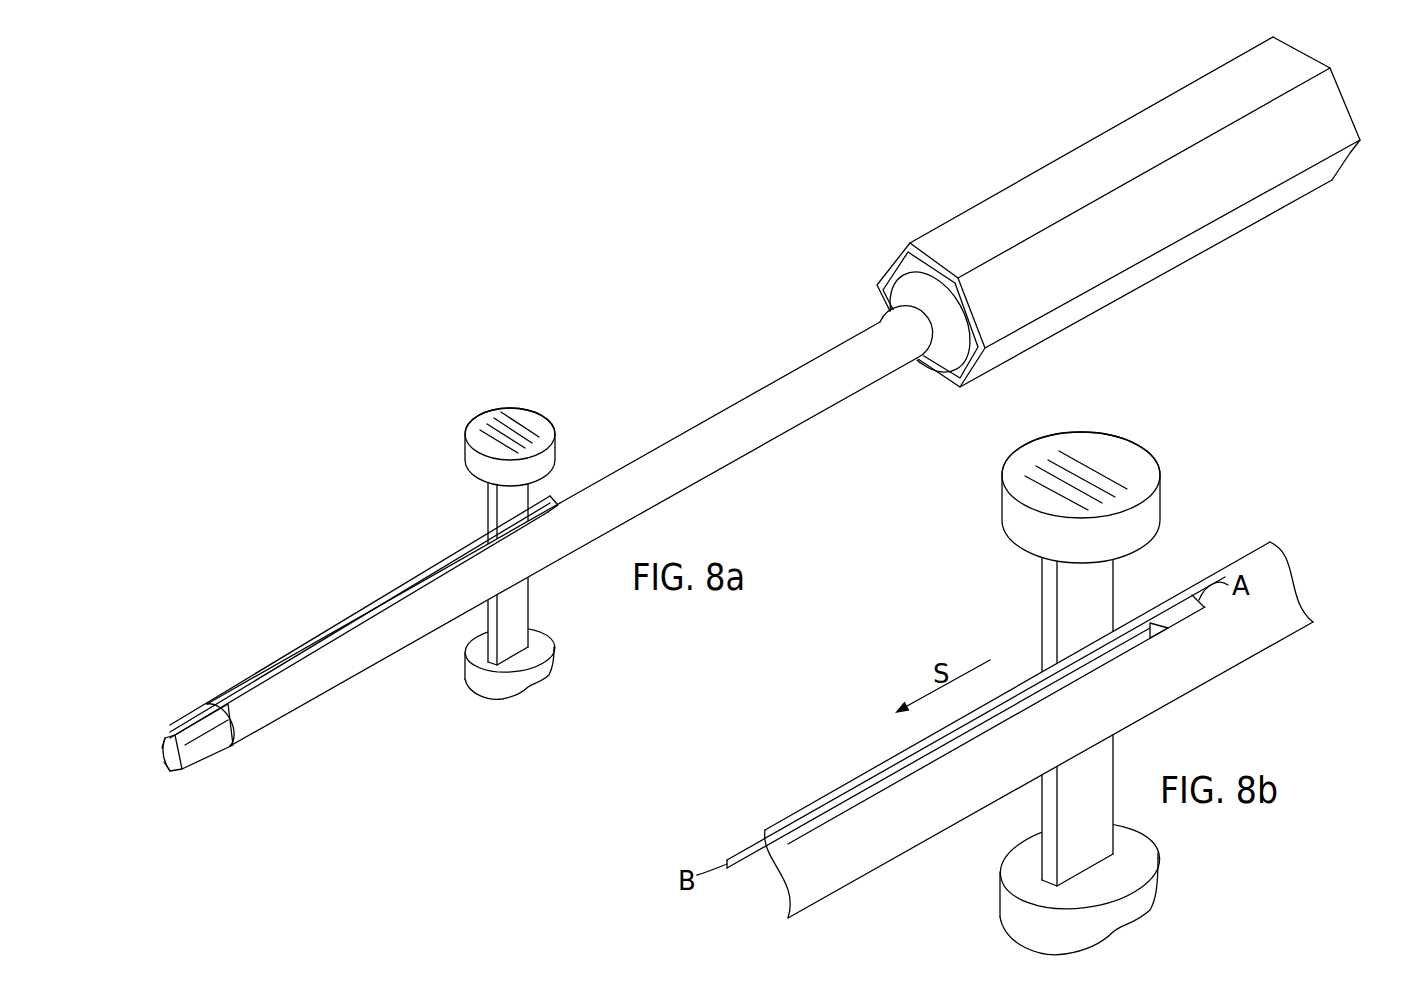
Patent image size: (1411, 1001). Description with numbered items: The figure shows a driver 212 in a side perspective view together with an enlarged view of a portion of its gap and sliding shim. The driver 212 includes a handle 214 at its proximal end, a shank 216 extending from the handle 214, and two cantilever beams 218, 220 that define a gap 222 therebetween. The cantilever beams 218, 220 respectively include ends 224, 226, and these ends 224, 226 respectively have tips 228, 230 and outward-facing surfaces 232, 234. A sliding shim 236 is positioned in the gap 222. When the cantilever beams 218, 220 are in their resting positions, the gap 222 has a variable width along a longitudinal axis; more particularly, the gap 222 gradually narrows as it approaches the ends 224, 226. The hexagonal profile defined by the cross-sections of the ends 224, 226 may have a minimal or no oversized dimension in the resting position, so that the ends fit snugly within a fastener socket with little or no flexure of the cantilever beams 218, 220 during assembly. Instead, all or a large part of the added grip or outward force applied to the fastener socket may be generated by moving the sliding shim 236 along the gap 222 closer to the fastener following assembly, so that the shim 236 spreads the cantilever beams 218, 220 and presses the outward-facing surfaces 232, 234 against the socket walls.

In FIG. 8a, the driver 212 is at (717, 444).
In FIG. 8a, the handle 214 is at (1118, 140).
In FIG. 8a, the shank 216 is at (779, 425).
In FIG. 8a, the cantilever beam 218 is at (331, 670).
In FIG. 8b, the cantilever beam 218 is at (832, 846).
In FIG. 8a, the cantilever beam 220 is at (313, 643).
In FIG. 8b, the cantilever beam 220 is at (816, 807).
In FIG. 8a, the gap 222 is at (439, 573).
In FIG. 8b, the gap 222 is at (1029, 687).
In FIG. 8a, the end 224 is at (179, 747).
In FIG. 8a, the end 226 is at (160, 722).
In FIG. 8a, the tip 228 is at (183, 769).
In FIG. 8a, the tip 230 is at (163, 748).
In FIG. 8a, the outward-facing surface 232 is at (210, 738).
In FIG. 8a, the outward-facing surface 234 is at (196, 716).
In FIG. 8a, the sliding shim 236 is at (509, 400).
In FIG. 8b, the sliding shim 236 is at (1159, 431).